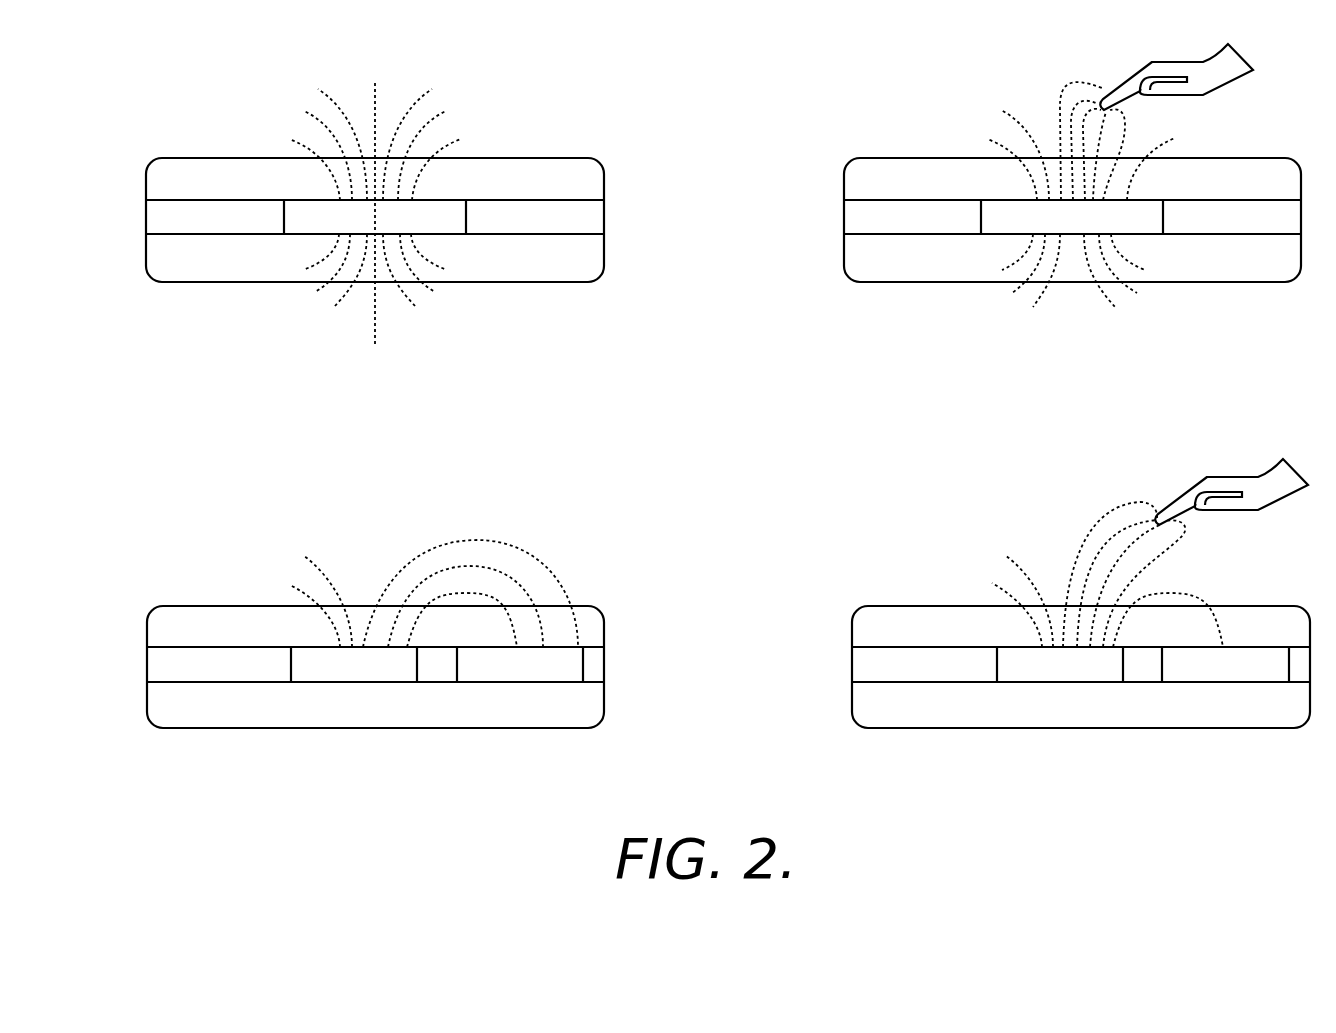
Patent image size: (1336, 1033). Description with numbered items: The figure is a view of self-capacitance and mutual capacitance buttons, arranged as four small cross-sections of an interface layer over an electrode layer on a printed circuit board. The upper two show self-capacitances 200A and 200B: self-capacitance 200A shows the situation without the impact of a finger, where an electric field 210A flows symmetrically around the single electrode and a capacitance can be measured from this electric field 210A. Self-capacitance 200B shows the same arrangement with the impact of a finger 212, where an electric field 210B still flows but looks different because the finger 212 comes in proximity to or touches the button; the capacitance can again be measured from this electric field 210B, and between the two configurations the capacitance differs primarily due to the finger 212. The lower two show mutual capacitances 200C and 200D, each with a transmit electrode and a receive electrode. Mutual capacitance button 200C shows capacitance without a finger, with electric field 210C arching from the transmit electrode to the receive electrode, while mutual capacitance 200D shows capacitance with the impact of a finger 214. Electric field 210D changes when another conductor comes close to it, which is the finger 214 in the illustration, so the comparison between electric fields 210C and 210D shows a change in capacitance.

The self-capacitance 200A is at (142, 146).
The self-capacitance 200B is at (846, 147).
The mutual capacitance button 200C is at (146, 590).
The mutual capacitance 200D is at (862, 590).
The electric field 210A is at (340, 338).
The electric field 210B is at (1038, 336).
The electric field 210C is at (562, 493).
The electric field 210D is at (1055, 535).
The finger 212 is at (1213, 101).
The finger 214 is at (1263, 517).